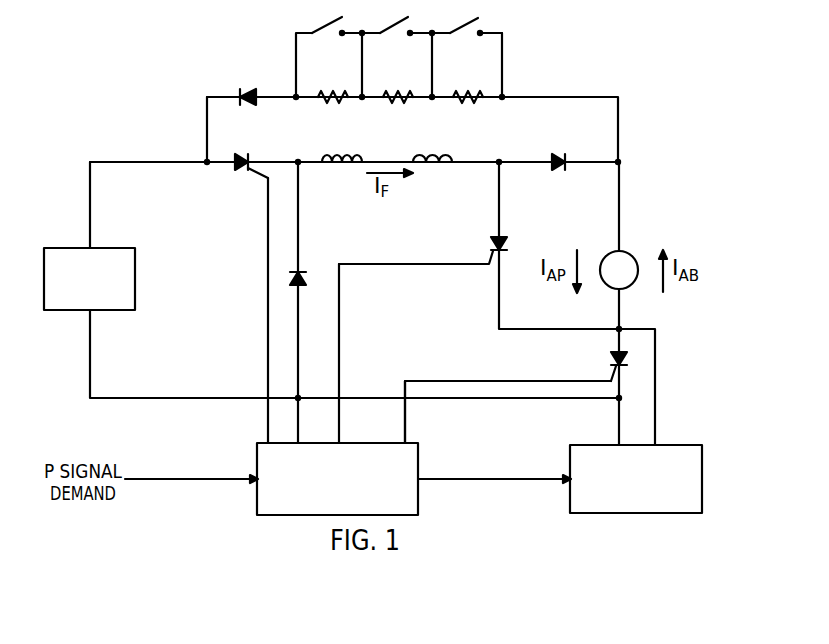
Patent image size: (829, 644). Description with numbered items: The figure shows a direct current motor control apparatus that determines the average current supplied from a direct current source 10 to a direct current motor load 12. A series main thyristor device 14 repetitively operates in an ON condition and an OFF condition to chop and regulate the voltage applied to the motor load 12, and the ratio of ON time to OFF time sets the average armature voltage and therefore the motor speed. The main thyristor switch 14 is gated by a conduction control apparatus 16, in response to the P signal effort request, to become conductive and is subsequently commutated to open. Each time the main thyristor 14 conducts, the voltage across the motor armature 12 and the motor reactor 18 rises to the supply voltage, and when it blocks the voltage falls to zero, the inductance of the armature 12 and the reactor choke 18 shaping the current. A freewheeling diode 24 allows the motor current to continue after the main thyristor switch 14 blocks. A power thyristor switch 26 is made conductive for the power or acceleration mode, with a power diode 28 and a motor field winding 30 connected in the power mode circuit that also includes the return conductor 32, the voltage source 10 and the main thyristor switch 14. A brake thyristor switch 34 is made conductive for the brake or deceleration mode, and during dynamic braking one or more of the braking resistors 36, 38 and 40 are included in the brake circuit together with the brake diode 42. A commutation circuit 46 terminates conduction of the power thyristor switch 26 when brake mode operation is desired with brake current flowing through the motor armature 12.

The direct current source 10 is at (114, 248).
The direct current motor load 12 is at (605, 258).
The series main thyristor device 14 is at (243, 171).
The conduction control apparatus 16 is at (414, 443).
The motor reactor 18 is at (326, 165).
The freewheeling diode 24 is at (308, 278).
The power thyristor switch 26 is at (610, 358).
The power diode 28 is at (565, 168).
The motor field winding 30 is at (448, 164).
The return conductor 32 is at (393, 394).
The brake thyristor switch 34 is at (491, 243).
The braking resistor 36 is at (468, 90).
The braking resistor 38 is at (401, 90).
The braking resistor 40 is at (333, 90).
The brake diode 42 is at (244, 87).
The commutation circuit 46 is at (688, 432).